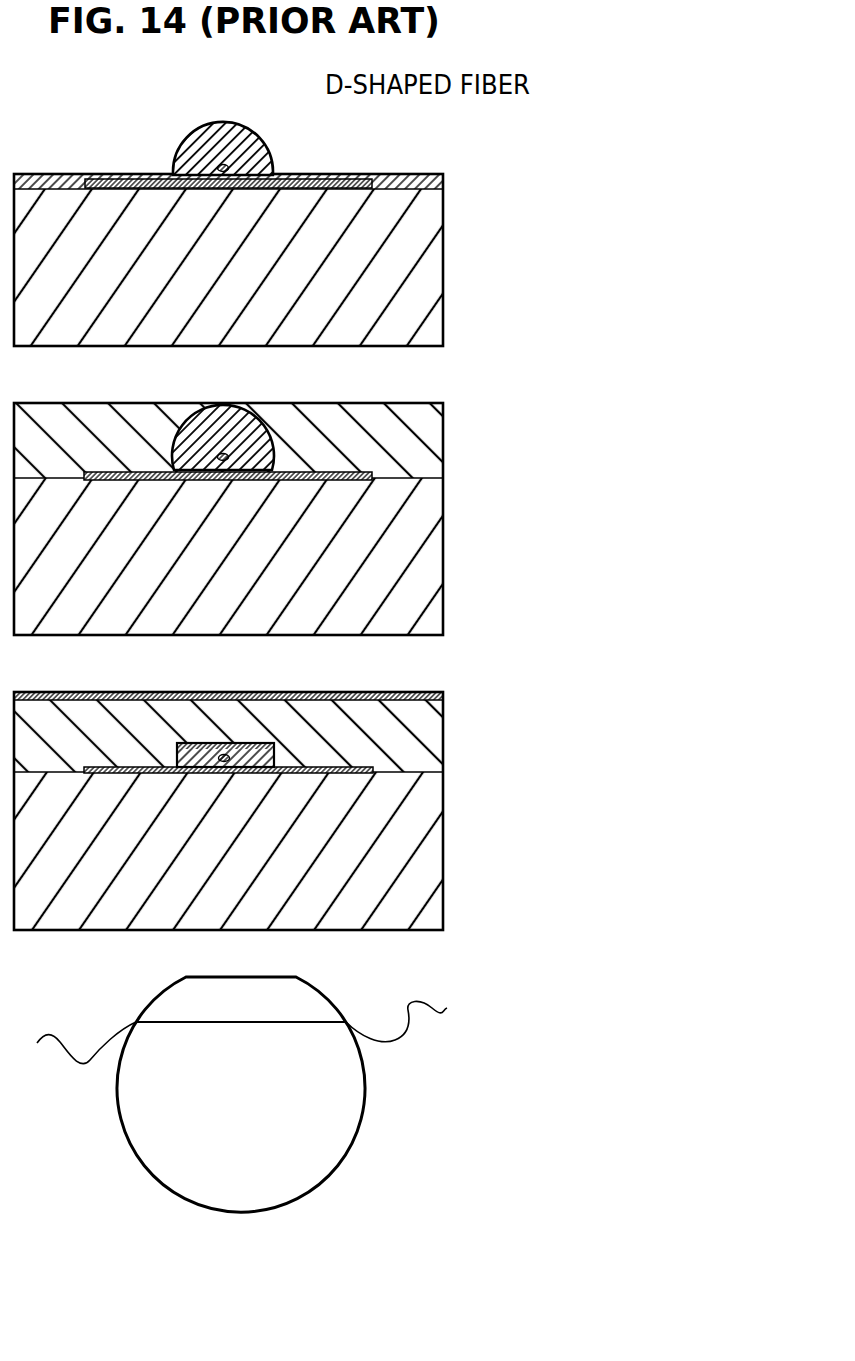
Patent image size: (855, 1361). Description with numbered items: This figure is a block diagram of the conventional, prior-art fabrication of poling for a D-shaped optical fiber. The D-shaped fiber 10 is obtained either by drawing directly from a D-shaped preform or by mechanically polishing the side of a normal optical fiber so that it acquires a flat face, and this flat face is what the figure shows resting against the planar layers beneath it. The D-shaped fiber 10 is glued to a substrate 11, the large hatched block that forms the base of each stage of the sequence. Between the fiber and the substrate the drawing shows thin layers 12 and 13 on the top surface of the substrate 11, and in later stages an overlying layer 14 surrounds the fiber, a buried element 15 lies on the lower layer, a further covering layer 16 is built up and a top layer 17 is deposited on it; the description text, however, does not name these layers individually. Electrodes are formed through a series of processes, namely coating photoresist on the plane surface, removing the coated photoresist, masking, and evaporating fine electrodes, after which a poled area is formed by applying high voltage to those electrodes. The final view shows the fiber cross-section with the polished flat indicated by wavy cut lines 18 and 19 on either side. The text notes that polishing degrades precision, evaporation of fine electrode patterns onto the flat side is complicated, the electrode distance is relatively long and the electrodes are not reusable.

The D-shaped fiber 10 is at (243, 122).
The substrate 11 is at (447, 273).
The core layer 12 is at (338, 174).
The lower cladding layer 13 is at (63, 176).
The upper cladding layer 14 is at (444, 431).
The fiber core slab 15 is at (252, 743).
The upper cladding layer 16 is at (444, 724).
The cover layer 17 is at (367, 692).
The polishing plane line 18 is at (58, 1033).
The polishing plane line 19 is at (438, 1008).